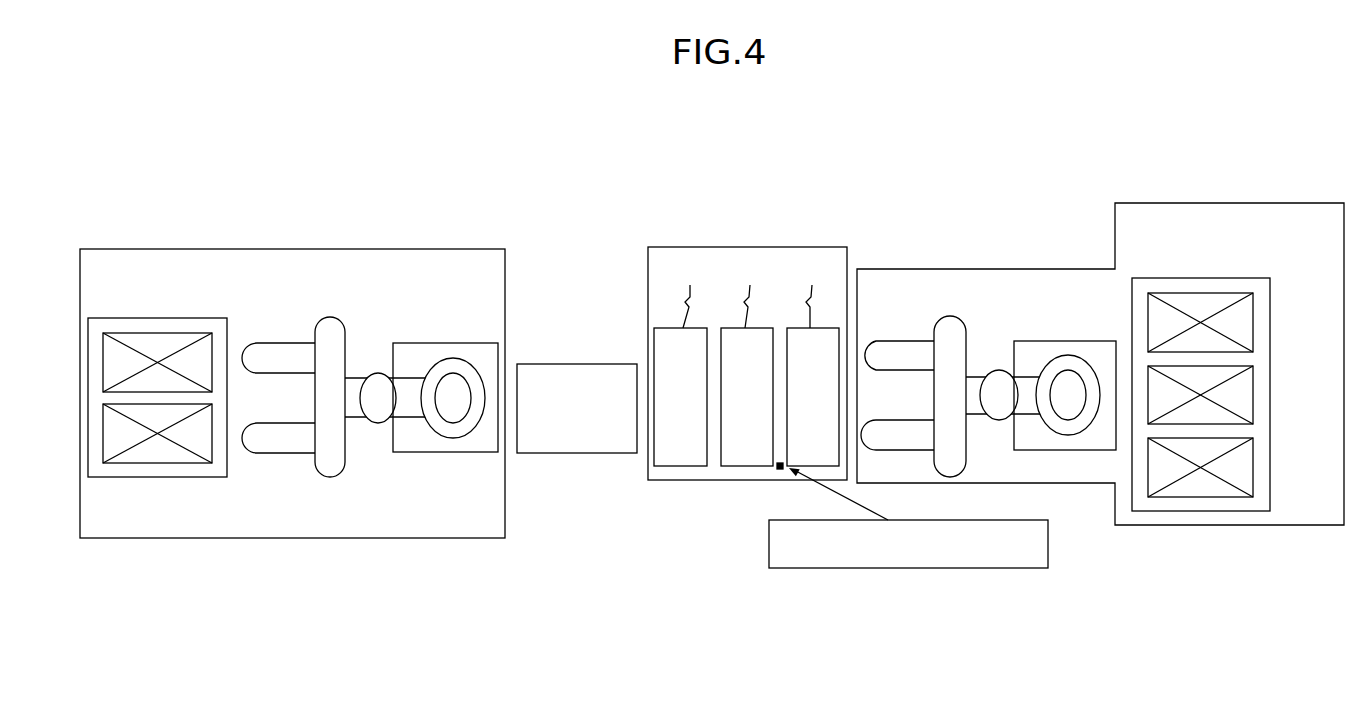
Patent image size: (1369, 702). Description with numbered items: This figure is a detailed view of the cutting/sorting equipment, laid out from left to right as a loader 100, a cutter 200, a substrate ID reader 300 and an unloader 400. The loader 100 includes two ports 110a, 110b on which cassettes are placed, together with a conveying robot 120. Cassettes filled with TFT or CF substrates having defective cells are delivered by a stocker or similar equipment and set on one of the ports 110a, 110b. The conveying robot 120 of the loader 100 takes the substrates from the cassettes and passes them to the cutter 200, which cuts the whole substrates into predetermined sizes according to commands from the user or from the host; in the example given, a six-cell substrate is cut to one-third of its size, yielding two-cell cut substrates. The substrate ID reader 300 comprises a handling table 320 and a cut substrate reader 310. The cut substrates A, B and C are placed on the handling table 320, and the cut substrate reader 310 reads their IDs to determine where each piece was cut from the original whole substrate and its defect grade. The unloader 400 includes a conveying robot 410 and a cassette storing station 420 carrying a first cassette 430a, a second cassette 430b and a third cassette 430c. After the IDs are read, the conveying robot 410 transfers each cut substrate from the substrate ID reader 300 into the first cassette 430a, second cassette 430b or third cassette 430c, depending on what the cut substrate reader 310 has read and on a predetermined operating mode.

The loader 100 is at (401, 249).
The port 110a is at (149, 333).
The port 110b is at (149, 463).
The conveying robot 120 is at (443, 343).
The cutter 200 is at (576, 364).
The substrate ID reader 300 is at (761, 230).
The cut substrate reader 310 is at (908, 568).
The handling table 320 is at (648, 268).
The unloader 400 is at (957, 269).
The conveying robot 410 is at (1060, 341).
The cassette storing station 420 is at (1207, 278).
The first cassette 430a is at (1255, 472).
The second cassette 430b is at (1255, 398).
The third cassette 430c is at (1253, 320).